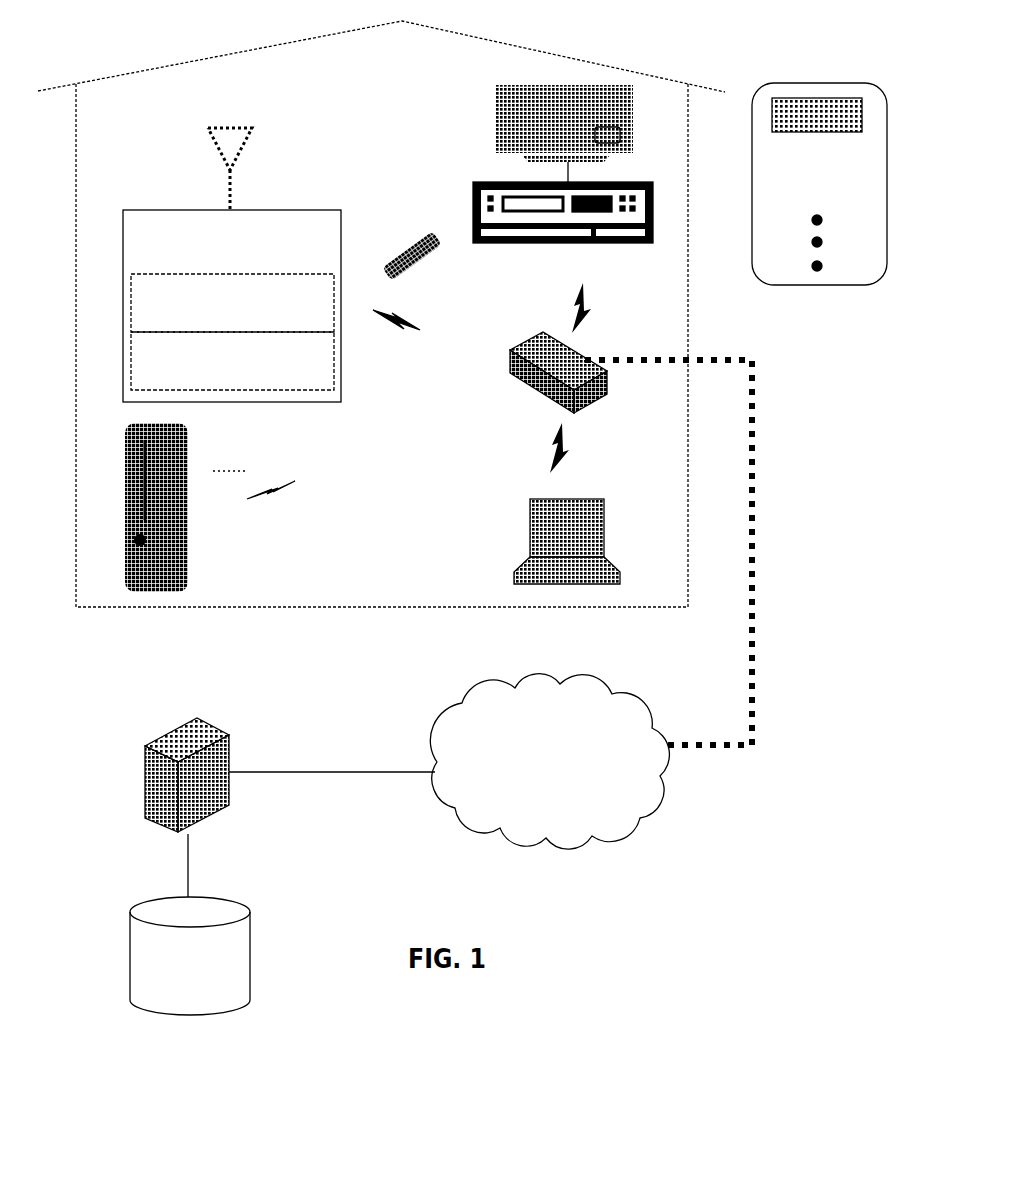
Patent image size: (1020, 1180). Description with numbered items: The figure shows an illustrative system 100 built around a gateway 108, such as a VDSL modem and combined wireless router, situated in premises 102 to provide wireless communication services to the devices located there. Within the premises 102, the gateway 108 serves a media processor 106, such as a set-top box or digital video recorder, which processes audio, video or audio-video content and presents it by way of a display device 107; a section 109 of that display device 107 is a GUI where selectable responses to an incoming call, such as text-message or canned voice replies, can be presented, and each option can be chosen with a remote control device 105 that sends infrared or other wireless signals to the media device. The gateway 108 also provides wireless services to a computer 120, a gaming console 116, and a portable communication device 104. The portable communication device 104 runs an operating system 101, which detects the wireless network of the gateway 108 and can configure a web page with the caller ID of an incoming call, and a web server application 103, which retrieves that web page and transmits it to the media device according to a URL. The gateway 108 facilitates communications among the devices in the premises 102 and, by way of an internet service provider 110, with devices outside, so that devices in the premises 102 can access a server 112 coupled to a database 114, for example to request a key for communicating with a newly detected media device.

The system 100 is at (452, 927).
The operating system 101 is at (232, 303).
The premises 102 is at (381, 314).
The web server application 103 is at (232, 361).
The portable communication device 104 is at (232, 265).
The remote control device 105 is at (403, 246).
The media processor 106 is at (473, 215).
The display device 107 is at (498, 117).
The gateway 108 is at (523, 343).
The section of the presentation device (GUI) 109 is at (611, 132).
The internet service provider 110 is at (549, 761).
The server 112 is at (165, 742).
The database 114 is at (253, 953).
The gaming console 116 is at (190, 555).
The computer 120 is at (514, 577).